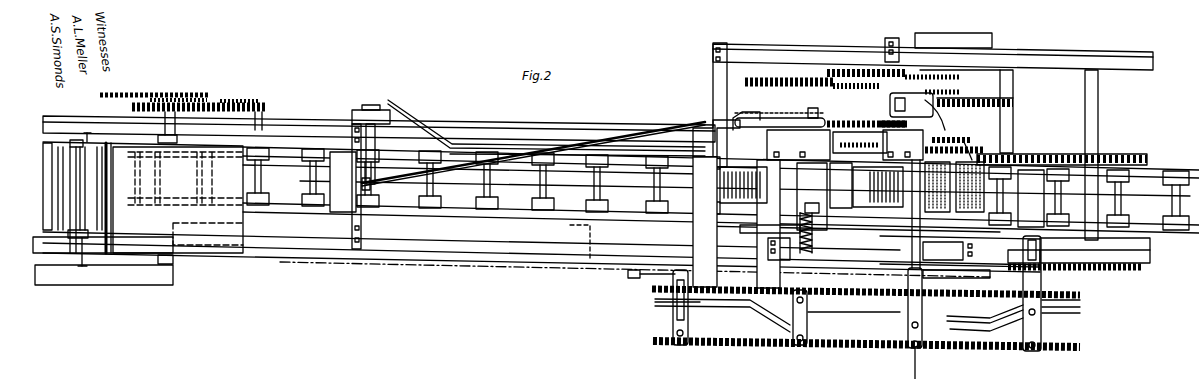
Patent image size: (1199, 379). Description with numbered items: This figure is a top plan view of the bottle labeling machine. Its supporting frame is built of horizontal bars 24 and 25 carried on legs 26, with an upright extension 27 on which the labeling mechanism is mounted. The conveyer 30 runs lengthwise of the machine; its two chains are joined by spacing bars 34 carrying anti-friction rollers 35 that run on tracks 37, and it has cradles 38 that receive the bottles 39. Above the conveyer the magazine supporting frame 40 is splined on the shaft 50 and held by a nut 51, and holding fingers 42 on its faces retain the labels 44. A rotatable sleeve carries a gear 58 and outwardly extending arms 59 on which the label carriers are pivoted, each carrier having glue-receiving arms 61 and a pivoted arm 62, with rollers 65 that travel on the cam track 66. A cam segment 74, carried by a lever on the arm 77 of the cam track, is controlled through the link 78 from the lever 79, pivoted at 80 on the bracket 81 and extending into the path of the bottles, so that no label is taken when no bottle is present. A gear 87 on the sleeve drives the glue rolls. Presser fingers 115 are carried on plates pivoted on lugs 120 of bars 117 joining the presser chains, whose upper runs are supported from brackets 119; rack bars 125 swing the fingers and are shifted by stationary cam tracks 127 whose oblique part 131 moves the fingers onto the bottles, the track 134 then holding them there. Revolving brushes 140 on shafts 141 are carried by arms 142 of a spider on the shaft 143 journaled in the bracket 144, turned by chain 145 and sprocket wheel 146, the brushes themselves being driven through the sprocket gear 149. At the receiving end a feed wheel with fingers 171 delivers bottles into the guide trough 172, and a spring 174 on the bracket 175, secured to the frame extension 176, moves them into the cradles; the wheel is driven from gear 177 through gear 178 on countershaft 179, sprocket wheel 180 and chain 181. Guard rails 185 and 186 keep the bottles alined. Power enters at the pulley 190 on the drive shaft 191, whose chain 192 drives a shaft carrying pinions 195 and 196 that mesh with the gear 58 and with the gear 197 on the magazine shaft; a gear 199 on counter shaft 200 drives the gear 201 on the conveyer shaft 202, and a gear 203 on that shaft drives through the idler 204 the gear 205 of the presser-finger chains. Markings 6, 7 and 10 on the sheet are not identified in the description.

The rods 6 is at (650, 299).
The rod 7 is at (913, 248).
The frame 10 is at (570, 242).
The horizontal bar 24 is at (598, 146).
The horizontal bar 25 is at (760, 230).
The legs 26 is at (366, 221).
The upright extension 27 is at (780, 110).
The conveyer 30 is at (270, 208).
The spacing bars 34 is at (262, 182).
The anti-friction rollers 35 is at (312, 152).
The tracks 37 is at (525, 160).
The cradles 38 is at (800, 198).
The bottles 39 is at (579, 256).
The magazine supporting frame 40 is at (841, 185).
The holding fingers 42 is at (870, 208).
The labels 44 is at (812, 196).
The shaft 50 is at (766, 246).
The nut 51 is at (812, 202).
The gear 58 is at (858, 82).
The arms 59 is at (911, 105).
The carrier arms 61 is at (815, 240).
The carrier arm 62 is at (845, 145).
The rollers 65 is at (840, 120).
The cam track 66 is at (746, 111).
The cam segment 74 is at (813, 110).
The arm 77 is at (713, 110).
The link 78 is at (598, 142).
The lever 79 is at (378, 183).
The pivot 80 is at (371, 107).
The bracket 81 is at (546, 122).
The gear 87 is at (842, 142).
The presser fingers 115 is at (922, 251).
The bars 117 is at (810, 326).
The brackets 119 is at (975, 283).
The lugs 120 is at (1042, 290).
The rack bars 125 is at (810, 309).
The cam tracks 127 is at (665, 300).
The oblique part 131 is at (750, 300).
The track 134 is at (976, 316).
The revolving brushes 140 is at (975, 160).
The brush shafts 141 is at (992, 198).
The arms 142 is at (968, 118).
The shaft 143 is at (956, 137).
The bracket 144 is at (928, 100).
The chain 145 is at (1000, 96).
The sprocket wheel 146 is at (968, 95).
The sprocket gear 149 is at (931, 115).
The fingers 171 is at (112, 210).
The guide trough 172 is at (70, 255).
The spring 174 is at (125, 140).
The bracket 175 is at (88, 137).
The frame extension 176 is at (104, 270).
The gear 177 is at (262, 108).
The gear 178 is at (235, 98).
The countershaft 179 is at (222, 105).
The sprocket wheel 180 is at (185, 97).
The chain 181 is at (125, 92).
The guard rail 185 is at (460, 150).
The guard rail 186 is at (420, 258).
The pulley 190 is at (953, 40).
The drive shaft 191 is at (948, 74).
The chain 192 is at (905, 51).
The pinion 195 is at (868, 120).
The pinion 196 is at (835, 69).
The gear 197 is at (768, 78).
The gear 199 is at (1020, 155).
The counter shaft 200 is at (1016, 111).
The gear 201 is at (1132, 155).
The shaft 202 is at (1098, 99).
The gear 203 is at (1100, 270).
The idler 204 is at (1075, 262).
The gear 205 is at (1015, 252).